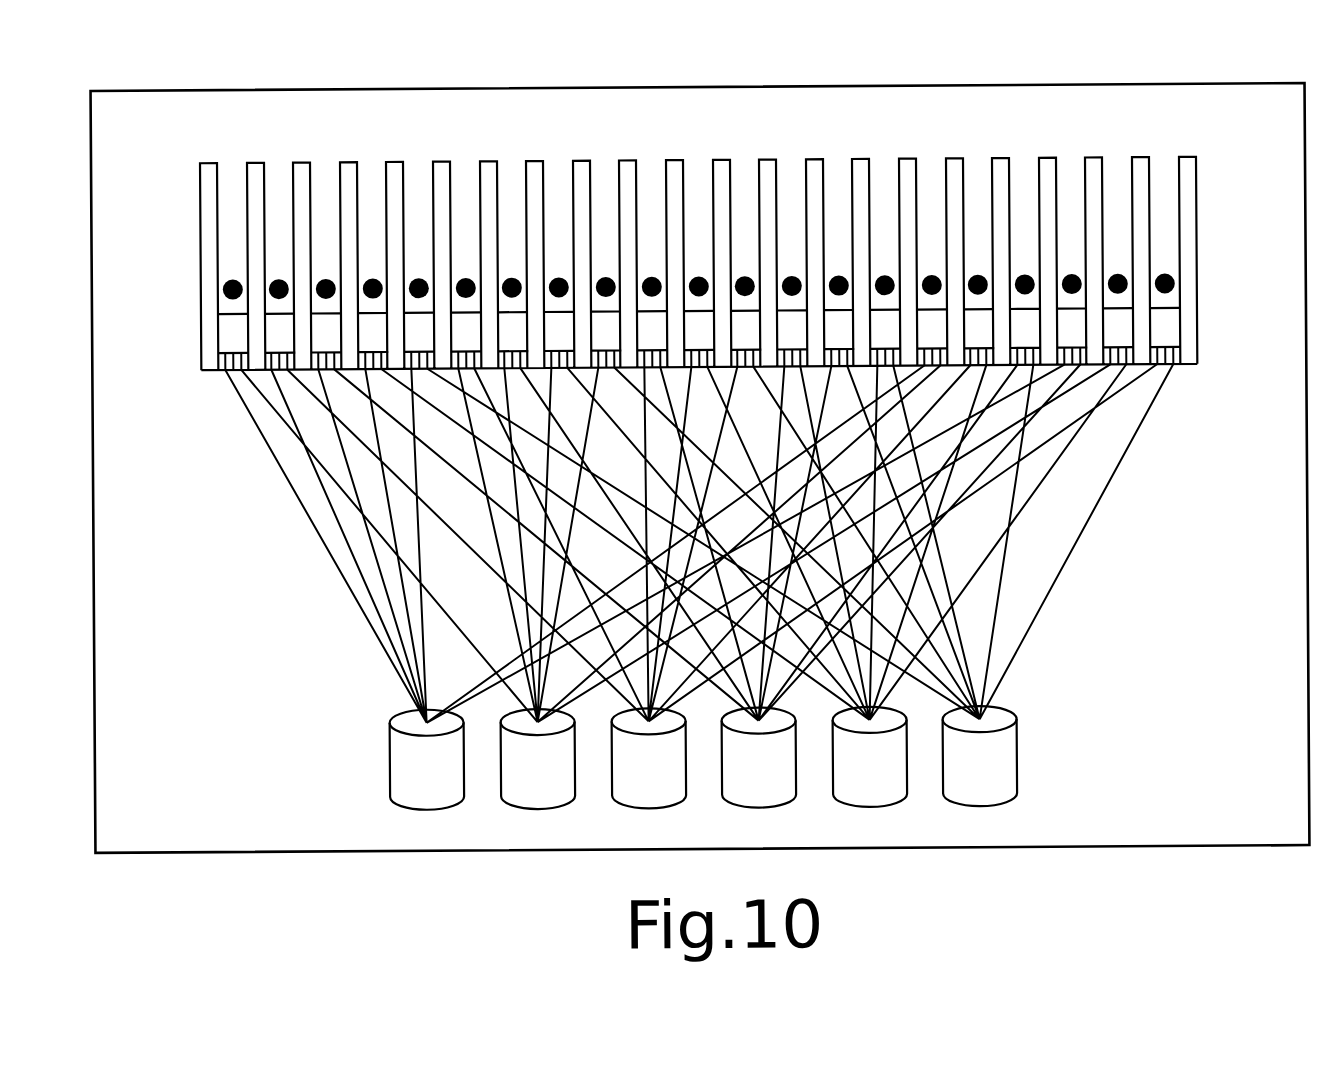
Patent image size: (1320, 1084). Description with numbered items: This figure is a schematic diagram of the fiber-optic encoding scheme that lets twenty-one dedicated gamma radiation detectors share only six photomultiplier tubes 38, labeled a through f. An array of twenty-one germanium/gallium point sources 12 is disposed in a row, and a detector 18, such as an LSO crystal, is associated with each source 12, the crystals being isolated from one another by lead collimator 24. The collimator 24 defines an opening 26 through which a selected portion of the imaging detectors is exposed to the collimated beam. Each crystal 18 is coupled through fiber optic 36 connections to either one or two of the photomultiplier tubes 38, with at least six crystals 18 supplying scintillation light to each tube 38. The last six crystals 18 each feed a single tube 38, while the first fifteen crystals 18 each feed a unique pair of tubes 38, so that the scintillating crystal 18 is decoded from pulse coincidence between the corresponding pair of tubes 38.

The point source 12 is at (228, 278).
The detector 18 is at (702, 237).
The collimator 24 is at (195, 213).
The opening 26 is at (229, 367).
The fiber optic 36 is at (352, 540).
The photomultiplier tube 38 is at (553, 806).